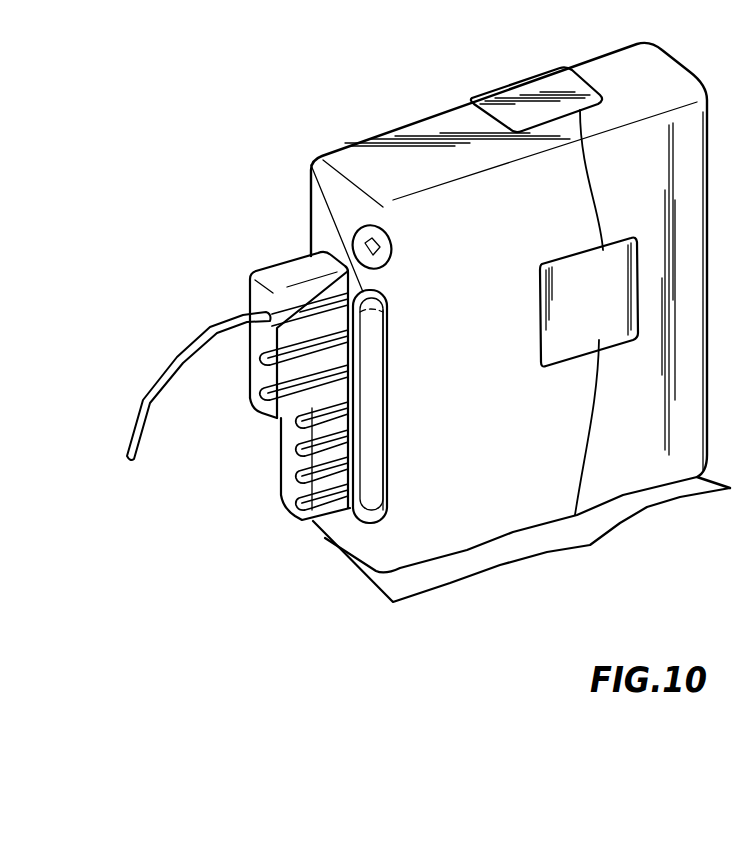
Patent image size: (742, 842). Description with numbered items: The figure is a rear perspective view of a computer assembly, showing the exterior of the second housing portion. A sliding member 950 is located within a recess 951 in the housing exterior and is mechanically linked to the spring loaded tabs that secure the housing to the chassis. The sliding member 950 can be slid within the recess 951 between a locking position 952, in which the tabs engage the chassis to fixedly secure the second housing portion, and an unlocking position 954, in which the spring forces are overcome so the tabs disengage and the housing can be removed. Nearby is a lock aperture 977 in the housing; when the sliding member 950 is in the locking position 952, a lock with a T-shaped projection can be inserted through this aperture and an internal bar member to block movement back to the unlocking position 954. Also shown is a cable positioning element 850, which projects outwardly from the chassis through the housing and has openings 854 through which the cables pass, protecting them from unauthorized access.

The recess 951 is at (307, 163).
The lock aperture 977 is at (392, 240).
The sliding member 950 is at (385, 460).
The locking position 952 is at (387, 368).
The unlocking position 954 is at (393, 305).
The cable positioning element 850 is at (305, 263).
The openings 854 is at (295, 308).